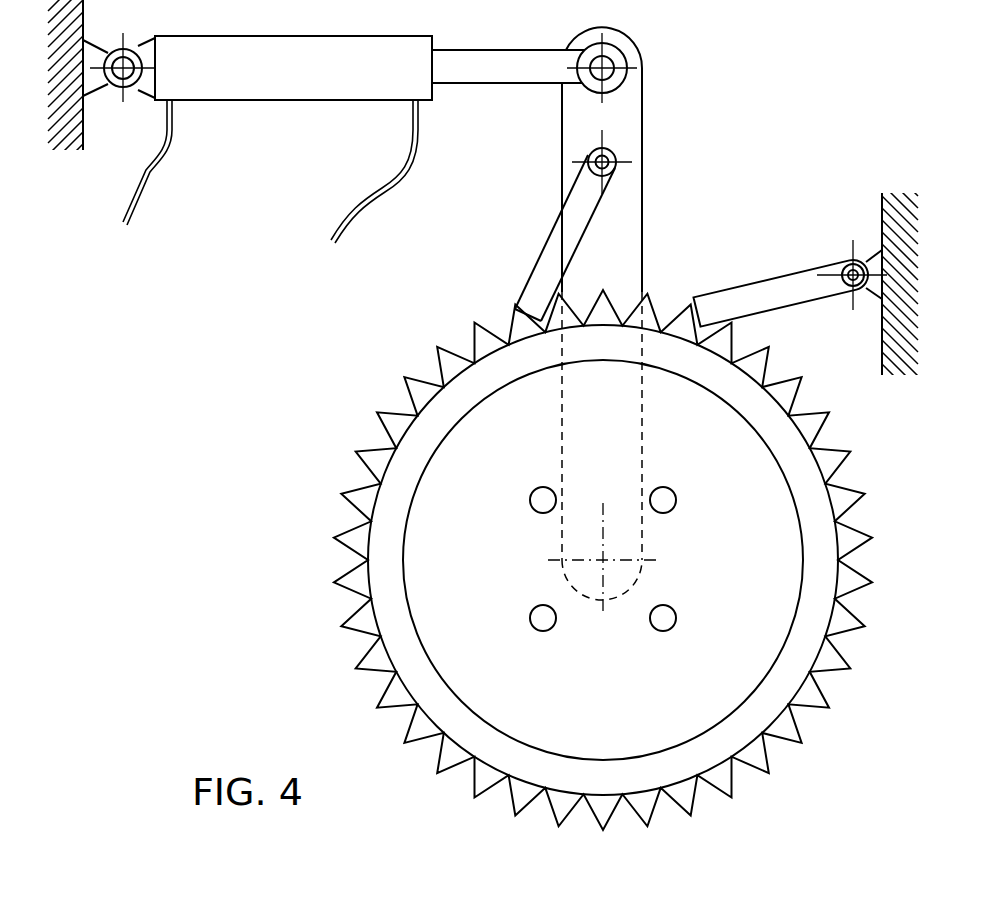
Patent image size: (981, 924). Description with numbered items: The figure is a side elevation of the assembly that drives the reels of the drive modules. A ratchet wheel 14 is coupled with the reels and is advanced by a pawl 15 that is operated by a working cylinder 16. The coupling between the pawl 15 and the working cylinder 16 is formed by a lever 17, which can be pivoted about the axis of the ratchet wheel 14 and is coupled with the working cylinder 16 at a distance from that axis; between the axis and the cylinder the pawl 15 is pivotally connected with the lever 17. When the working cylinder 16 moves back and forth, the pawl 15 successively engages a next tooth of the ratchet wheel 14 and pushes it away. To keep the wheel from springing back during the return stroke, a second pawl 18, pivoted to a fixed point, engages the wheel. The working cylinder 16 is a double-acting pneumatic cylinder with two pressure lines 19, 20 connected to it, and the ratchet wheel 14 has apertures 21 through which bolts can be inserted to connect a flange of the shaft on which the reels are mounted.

The ratchet wheel 14 is at (348, 572).
The pawl 15 is at (550, 258).
The working cylinder 16 is at (305, 81).
The lever 17 is at (643, 113).
The second pawl 18 is at (760, 297).
The pressure line 19 is at (143, 200).
The pressure line 20 is at (373, 200).
The apertures 21 is at (540, 503).